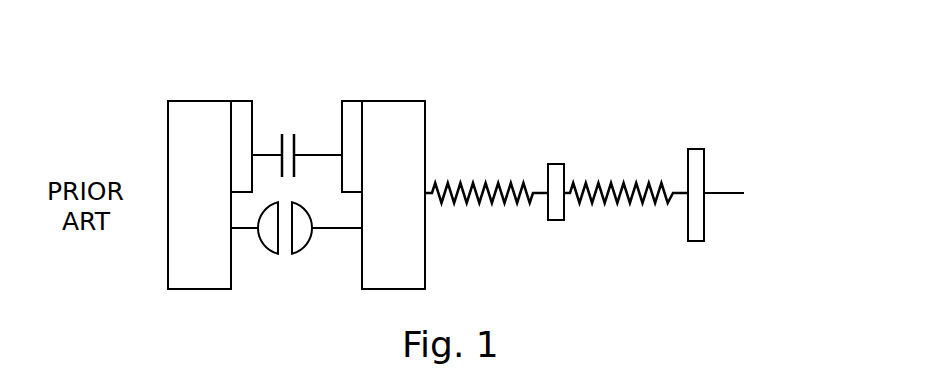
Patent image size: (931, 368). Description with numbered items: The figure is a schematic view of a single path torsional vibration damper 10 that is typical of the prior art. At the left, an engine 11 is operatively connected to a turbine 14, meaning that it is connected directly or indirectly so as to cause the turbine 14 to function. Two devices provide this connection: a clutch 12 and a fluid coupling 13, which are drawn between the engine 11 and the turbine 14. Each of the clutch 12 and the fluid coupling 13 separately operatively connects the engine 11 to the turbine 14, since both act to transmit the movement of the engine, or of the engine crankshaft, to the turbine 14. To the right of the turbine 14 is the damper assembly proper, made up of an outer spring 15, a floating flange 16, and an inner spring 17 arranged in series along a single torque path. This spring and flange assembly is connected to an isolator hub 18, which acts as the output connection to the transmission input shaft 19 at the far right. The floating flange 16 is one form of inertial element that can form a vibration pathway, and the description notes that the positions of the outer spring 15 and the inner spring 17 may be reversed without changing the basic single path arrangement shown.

The single path torsional vibration damper 10 is at (556, 94).
The engine 11 is at (200, 100).
The clutch 12 is at (283, 132).
The fluid coupling 13 is at (284, 255).
The turbine 14 is at (383, 101).
The outer spring 15 is at (476, 208).
The floating flange 16 is at (555, 222).
The inner spring 17 is at (627, 205).
The isolator hub 18 is at (696, 157).
The transmission input shaft 19 is at (728, 192).